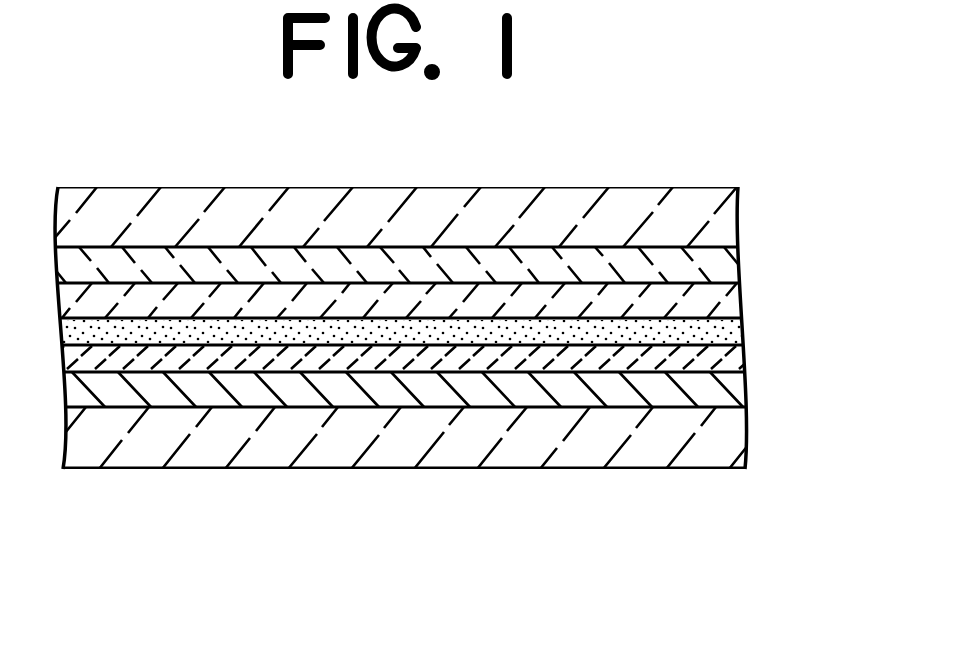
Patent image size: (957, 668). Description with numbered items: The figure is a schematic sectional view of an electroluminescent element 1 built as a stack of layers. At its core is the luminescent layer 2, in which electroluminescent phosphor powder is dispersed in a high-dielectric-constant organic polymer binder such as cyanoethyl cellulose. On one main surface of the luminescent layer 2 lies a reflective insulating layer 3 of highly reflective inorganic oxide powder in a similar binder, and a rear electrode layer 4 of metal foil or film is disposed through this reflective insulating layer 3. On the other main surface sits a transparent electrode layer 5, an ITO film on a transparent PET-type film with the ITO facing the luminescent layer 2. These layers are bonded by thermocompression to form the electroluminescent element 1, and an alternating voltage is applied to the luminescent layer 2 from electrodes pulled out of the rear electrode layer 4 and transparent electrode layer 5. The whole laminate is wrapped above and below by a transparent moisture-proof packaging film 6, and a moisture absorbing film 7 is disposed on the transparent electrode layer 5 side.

The electroluminescent element 1 is at (458, 304).
The luminescent layer 2 is at (743, 321).
The reflective insulating layer 3 is at (735, 352).
The rear electrode layer 4 is at (422, 396).
The transparent electrode layer 5 is at (725, 300).
The packaging film 6 is at (727, 217).
The moisture absorbing film 7 is at (720, 263).